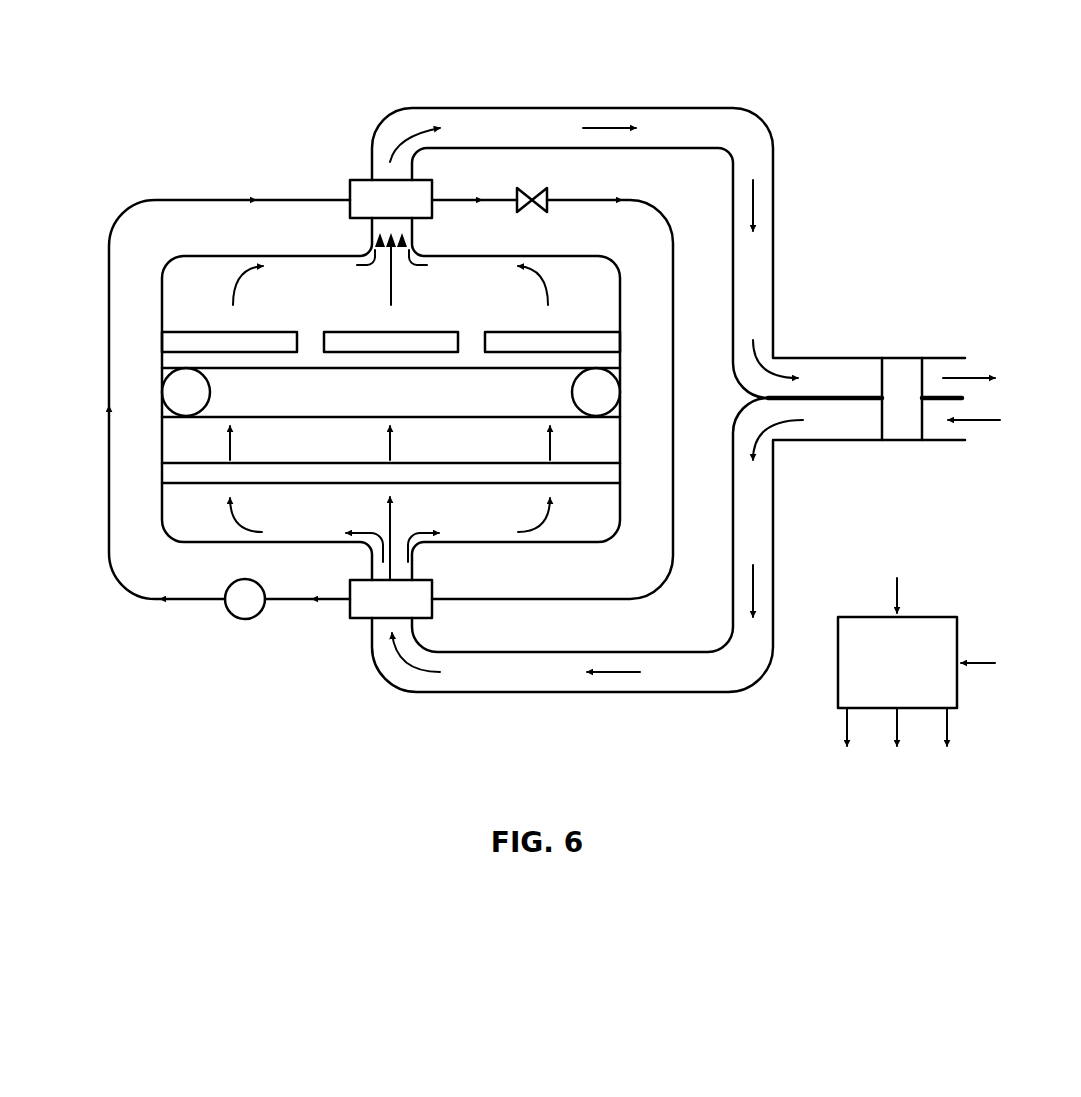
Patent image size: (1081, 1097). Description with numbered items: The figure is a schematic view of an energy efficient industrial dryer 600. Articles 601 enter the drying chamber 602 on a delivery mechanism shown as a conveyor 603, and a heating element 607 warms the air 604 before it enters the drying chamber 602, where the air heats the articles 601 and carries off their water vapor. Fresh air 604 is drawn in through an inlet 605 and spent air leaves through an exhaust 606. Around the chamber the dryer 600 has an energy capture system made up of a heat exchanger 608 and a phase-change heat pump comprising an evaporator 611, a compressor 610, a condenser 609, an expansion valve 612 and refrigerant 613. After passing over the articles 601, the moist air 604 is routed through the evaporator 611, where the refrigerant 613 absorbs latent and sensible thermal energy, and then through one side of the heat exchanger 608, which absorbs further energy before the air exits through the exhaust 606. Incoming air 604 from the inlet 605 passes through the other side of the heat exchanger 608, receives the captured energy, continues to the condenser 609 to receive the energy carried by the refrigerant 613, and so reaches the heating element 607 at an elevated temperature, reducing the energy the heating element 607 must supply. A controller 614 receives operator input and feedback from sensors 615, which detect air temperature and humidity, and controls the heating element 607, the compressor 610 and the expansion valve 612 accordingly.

The dryer 600 is at (886, 80).
The articles 601 is at (230, 332).
The drying chamber 602 is at (288, 268).
The conveyor 603 is at (391, 392).
The air 604 is at (970, 377).
The inlet 605 is at (950, 441).
The exhaust 606 is at (947, 355).
The heating element 607 is at (268, 477).
The heat exchanger 608 is at (900, 443).
The condenser 609 is at (391, 599).
The compressor 610 is at (244, 620).
The evaporator 611 is at (391, 199).
The expansion valve 612 is at (521, 192).
The refrigerant 613 is at (244, 255).
The controller 614 is at (940, 680).
The sensors 615 is at (383, 224).